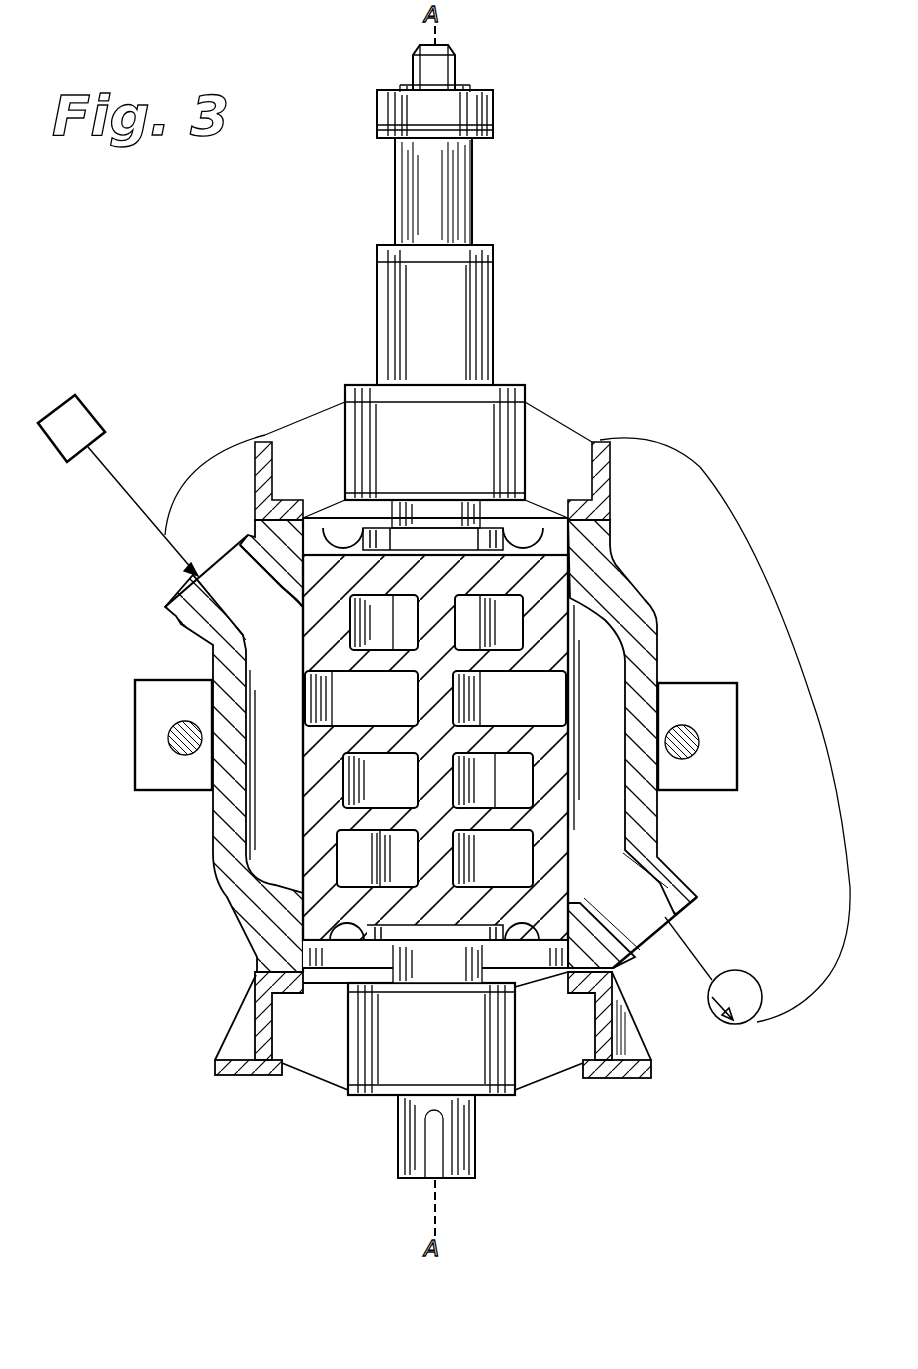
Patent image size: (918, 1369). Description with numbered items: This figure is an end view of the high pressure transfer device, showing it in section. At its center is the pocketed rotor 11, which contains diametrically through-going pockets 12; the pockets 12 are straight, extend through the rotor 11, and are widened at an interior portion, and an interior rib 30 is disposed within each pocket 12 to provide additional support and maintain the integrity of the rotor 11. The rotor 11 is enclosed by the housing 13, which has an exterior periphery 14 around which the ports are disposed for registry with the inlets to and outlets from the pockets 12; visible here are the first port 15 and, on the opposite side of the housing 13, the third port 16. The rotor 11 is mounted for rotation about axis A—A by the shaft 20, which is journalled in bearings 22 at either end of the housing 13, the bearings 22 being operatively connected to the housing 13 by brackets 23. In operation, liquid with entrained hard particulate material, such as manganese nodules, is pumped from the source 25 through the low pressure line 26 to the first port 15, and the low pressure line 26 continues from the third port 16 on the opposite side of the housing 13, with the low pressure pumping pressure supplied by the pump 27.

The pocketed rotor 11 is at (578, 790).
The diametrically through-going pockets 12 is at (345, 650).
The housing 13 is at (650, 818).
The exterior periphery 14 is at (660, 628).
The first port 15 is at (195, 586).
The third port 16 is at (668, 912).
The shaft 20 is at (470, 218).
The bearings 22 is at (505, 410).
The brackets 23 is at (255, 1003).
The source 25 is at (77, 412).
The low pressure line 26 is at (173, 547).
The pump 27 is at (773, 967).
The interior rib 30 is at (478, 702).